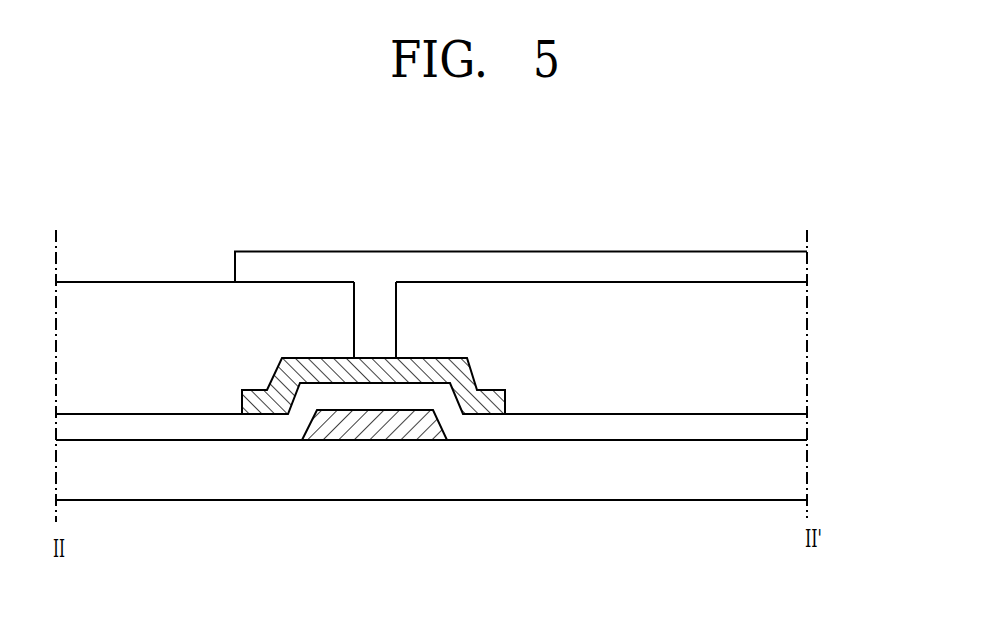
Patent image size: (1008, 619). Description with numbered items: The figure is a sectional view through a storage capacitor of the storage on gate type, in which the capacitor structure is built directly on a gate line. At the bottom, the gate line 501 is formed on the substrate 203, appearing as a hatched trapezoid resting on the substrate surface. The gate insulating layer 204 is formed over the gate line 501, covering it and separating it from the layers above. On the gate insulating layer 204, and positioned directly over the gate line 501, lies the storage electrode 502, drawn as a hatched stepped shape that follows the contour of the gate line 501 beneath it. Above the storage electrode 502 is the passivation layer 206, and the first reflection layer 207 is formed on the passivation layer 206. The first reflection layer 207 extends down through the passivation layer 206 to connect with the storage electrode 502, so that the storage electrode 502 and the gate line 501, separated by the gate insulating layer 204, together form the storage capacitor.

The substrate 203 is at (802, 473).
The gate insulating layer 204 is at (802, 428).
The passivation layer 206 is at (802, 335).
The first reflection layer 207 is at (802, 263).
The gate line 501 is at (377, 430).
The storage electrode 502 is at (483, 415).